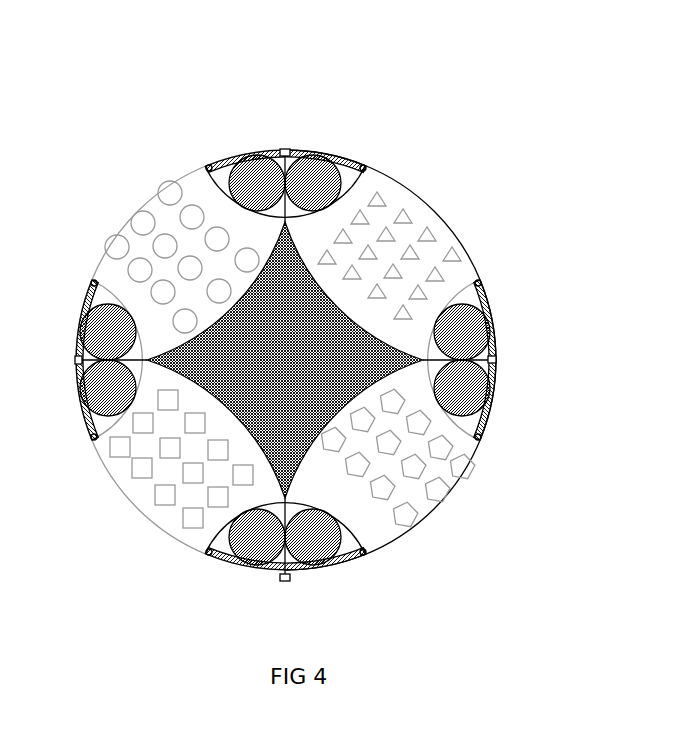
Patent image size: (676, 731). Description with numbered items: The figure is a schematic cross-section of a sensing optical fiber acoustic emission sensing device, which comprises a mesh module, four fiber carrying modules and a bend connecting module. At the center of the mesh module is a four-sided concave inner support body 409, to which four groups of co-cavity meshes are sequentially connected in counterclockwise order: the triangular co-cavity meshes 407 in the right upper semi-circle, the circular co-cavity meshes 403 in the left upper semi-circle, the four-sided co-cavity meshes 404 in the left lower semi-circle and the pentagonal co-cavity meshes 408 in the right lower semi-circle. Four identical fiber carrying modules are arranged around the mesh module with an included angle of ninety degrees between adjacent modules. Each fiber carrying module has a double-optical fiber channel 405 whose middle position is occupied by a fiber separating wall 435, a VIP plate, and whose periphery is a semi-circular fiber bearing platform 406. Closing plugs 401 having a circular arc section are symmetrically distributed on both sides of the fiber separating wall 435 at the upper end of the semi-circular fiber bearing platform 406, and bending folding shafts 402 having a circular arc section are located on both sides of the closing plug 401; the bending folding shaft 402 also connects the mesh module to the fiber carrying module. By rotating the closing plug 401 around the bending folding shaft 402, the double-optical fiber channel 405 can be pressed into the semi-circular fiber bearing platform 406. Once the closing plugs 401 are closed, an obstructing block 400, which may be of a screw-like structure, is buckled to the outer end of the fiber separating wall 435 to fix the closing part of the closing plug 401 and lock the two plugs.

The obstructing block 400 is at (285, 152).
The closing plug 401 is at (357, 156).
The bending folding shaft 402 is at (209, 164).
The circular co-cavity meshes 403 is at (160, 189).
The four-sided co-cavity meshes 404 is at (185, 526).
The double-optical fiber channel 405 is at (335, 161).
The semi-circular fiber bearing platform 406 is at (367, 162).
The triangular co-cavity meshes 407 is at (384, 200).
The pentagonal co-cavity meshes 408 is at (473, 473).
The four-sided concave inner support body 409 is at (303, 455).
The fiber separating wall 435 is at (345, 193).